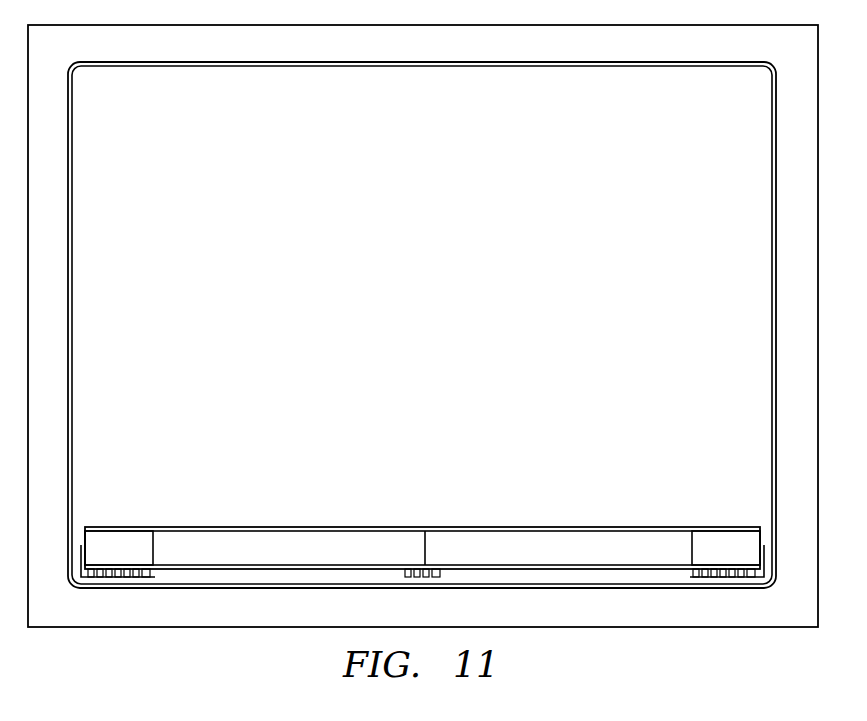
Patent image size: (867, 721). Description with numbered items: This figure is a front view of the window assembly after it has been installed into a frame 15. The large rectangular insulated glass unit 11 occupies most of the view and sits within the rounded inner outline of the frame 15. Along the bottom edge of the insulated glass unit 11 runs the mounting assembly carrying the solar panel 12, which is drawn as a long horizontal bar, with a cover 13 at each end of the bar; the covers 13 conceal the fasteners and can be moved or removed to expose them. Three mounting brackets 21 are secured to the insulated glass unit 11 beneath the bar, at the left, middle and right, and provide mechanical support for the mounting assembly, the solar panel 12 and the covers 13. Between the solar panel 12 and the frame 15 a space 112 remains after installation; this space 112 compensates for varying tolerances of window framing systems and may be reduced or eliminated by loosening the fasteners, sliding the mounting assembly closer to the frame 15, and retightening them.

The insulated glass unit 11 is at (432, 200).
The frame 15 is at (57, 307).
The solar panel 12 is at (323, 548).
The cover 13 is at (122, 548).
The space 112 is at (228, 577).
The mounting bracket 21 is at (120, 573).